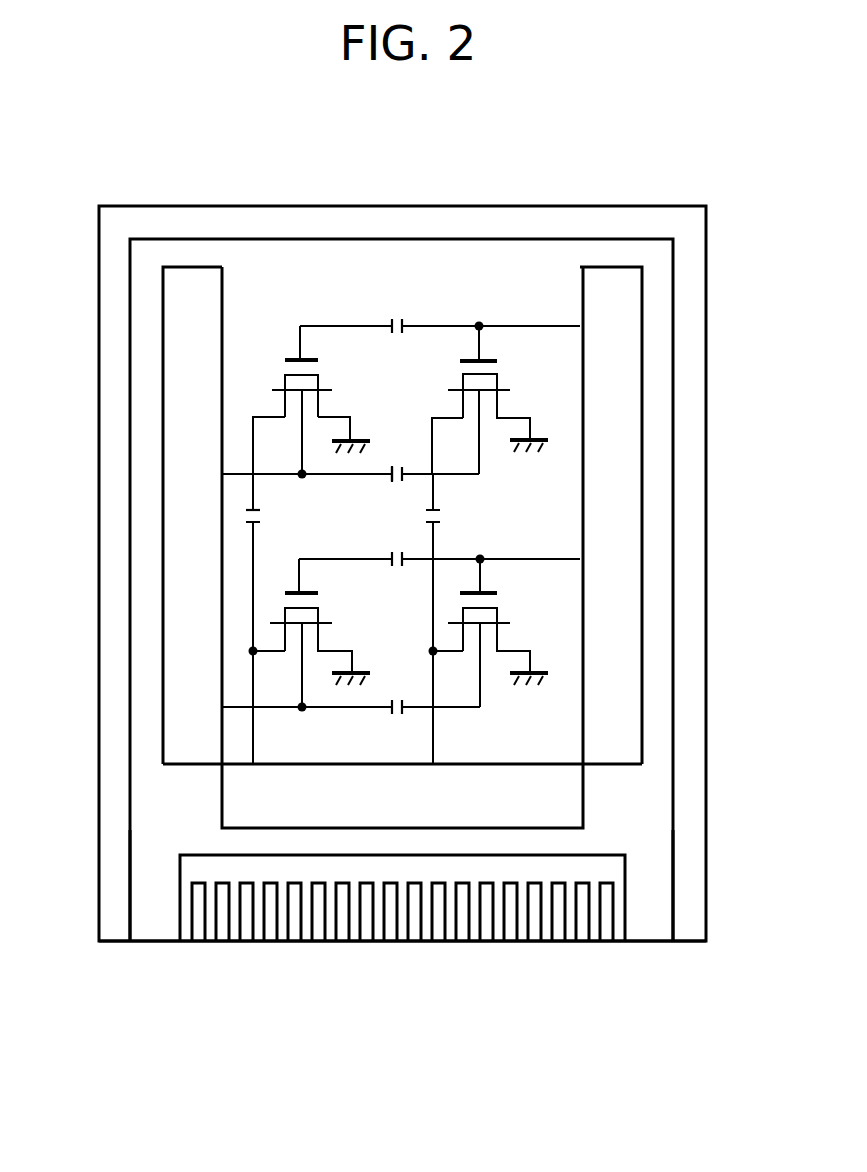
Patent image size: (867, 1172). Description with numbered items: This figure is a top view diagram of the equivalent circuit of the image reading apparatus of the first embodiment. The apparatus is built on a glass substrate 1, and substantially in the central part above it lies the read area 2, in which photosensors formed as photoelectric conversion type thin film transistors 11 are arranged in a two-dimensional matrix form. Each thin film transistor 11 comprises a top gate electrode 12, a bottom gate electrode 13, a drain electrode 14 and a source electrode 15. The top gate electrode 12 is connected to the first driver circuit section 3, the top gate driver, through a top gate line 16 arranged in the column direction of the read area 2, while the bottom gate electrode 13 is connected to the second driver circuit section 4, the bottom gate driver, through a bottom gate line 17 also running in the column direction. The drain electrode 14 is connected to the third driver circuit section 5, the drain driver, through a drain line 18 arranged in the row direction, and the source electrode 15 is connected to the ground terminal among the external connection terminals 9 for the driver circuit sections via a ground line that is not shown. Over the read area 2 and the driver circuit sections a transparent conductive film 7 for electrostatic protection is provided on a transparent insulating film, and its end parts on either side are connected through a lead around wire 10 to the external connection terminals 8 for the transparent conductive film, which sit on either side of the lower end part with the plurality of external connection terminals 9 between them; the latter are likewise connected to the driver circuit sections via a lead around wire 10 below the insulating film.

The glass substrate 1 is at (659, 207).
The read area 2 is at (513, 293).
The first driver circuit section 3 is at (611, 455).
The second driver circuit section 4 is at (197, 418).
The third driver circuit section 5 is at (553, 797).
The transparent conductive film 7 is at (660, 342).
The external connection terminals for the transparent conductive film 8 is at (157, 931).
The external connection terminals for the driver circuit sections 9 is at (199, 931).
The lead around wire 10 is at (135, 868).
The photoelectric conversion type thin film transistor 11 is at (326, 363).
The top gate electrode 12 is at (318, 358).
The bottom gate electrode 13 is at (326, 386).
The drain electrode 14 is at (273, 418).
The source electrode 15 is at (337, 417).
The top gate line 16 is at (365, 270).
The bottom gate line 17 is at (347, 478).
The drain line 18 is at (255, 498).